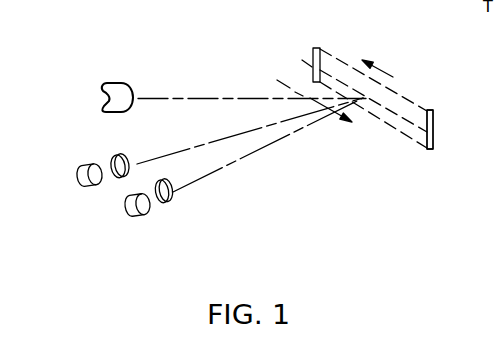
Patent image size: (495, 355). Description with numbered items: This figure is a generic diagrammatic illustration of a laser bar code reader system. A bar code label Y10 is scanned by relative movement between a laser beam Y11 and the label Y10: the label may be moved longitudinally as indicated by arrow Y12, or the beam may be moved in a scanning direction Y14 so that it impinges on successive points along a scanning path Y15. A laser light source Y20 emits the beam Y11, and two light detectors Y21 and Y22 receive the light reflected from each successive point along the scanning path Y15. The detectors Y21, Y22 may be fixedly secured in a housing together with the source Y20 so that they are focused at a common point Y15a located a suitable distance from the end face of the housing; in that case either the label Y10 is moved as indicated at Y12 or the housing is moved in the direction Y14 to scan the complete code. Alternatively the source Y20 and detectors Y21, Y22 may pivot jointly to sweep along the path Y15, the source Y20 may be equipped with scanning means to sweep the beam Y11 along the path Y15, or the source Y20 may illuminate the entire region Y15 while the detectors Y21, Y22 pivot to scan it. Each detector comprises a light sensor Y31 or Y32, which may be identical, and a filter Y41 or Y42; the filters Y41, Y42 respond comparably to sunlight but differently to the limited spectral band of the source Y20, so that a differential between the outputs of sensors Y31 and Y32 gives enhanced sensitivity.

The bar code label Y10 is at (434, 113).
The laser beam Y11 is at (160, 97).
The arrow indicating longitudinal direction Y12 is at (387, 70).
The scanning direction Y14 is at (283, 87).
The scanning path Y15 is at (434, 129).
The common focus point Y15a is at (364, 96).
The laser light source Y20 is at (124, 93).
The light detector Y21 is at (57, 193).
The light detector Y22 is at (108, 217).
The light sensor Y31 is at (87, 164).
The light sensor Y32 is at (142, 216).
The filter Y41 is at (125, 153).
The filter Y42 is at (169, 205).